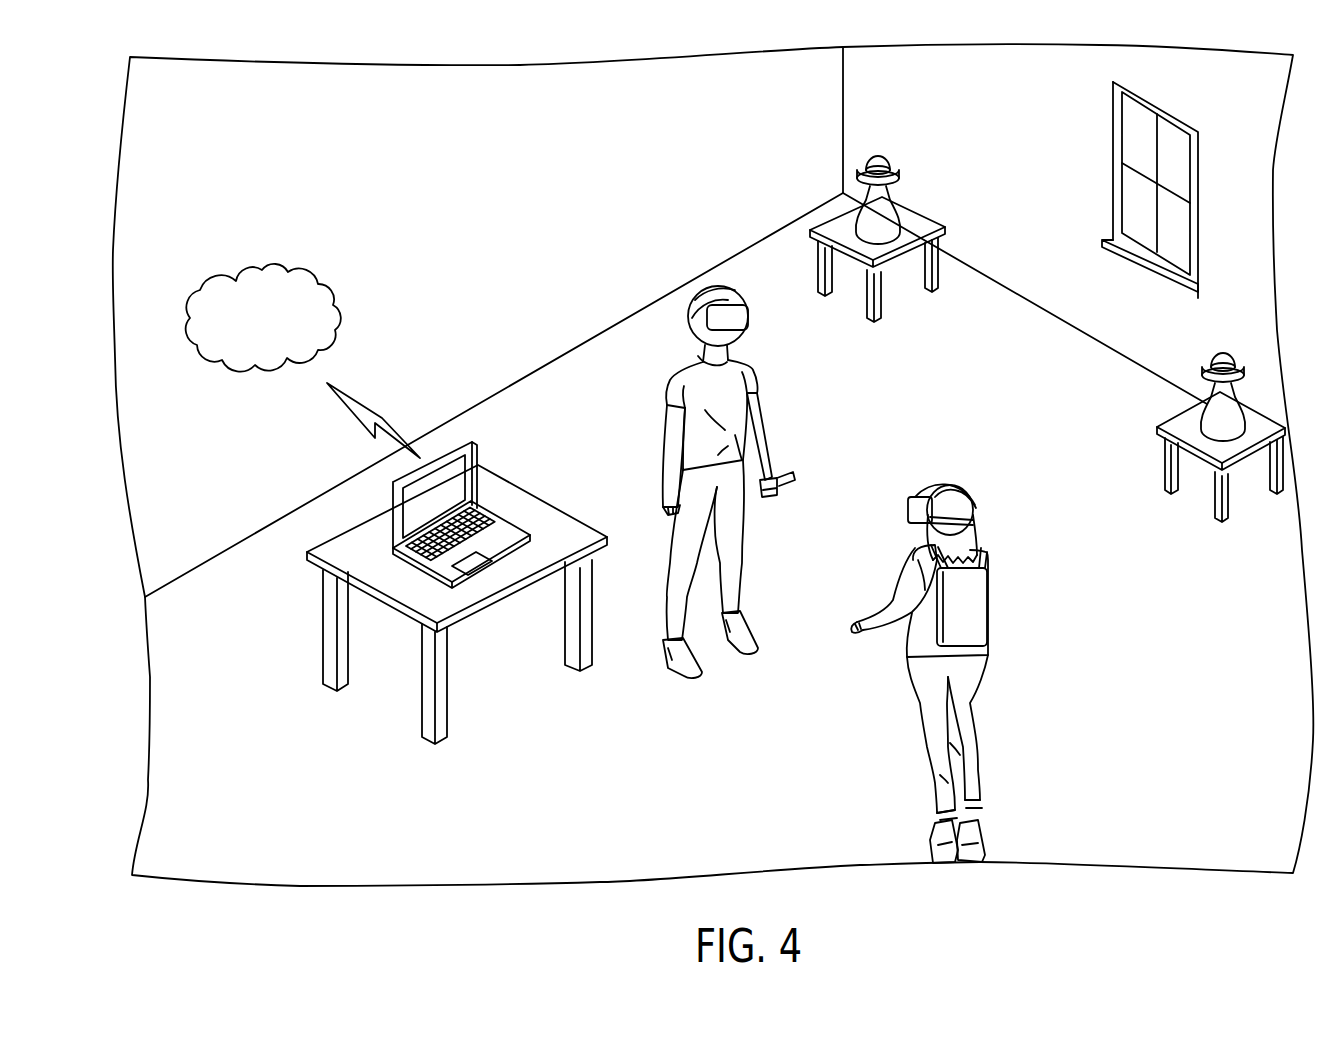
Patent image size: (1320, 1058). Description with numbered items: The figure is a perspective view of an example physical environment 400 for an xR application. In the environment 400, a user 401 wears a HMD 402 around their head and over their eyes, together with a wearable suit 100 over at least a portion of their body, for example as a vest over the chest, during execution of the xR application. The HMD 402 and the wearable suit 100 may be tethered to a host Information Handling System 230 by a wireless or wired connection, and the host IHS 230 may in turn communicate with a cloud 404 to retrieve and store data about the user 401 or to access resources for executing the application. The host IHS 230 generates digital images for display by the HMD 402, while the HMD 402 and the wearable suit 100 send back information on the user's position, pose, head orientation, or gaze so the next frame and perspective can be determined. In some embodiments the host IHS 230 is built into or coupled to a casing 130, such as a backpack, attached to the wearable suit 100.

The environment 400 is at (93, 228).
The cloud 404 is at (202, 285).
The host Information Handling System 230 is at (388, 495).
The HMD 402 is at (908, 508).
The wearable suit 100 is at (944, 576).
The casing 130 is at (980, 635).
The user 401 is at (900, 790).